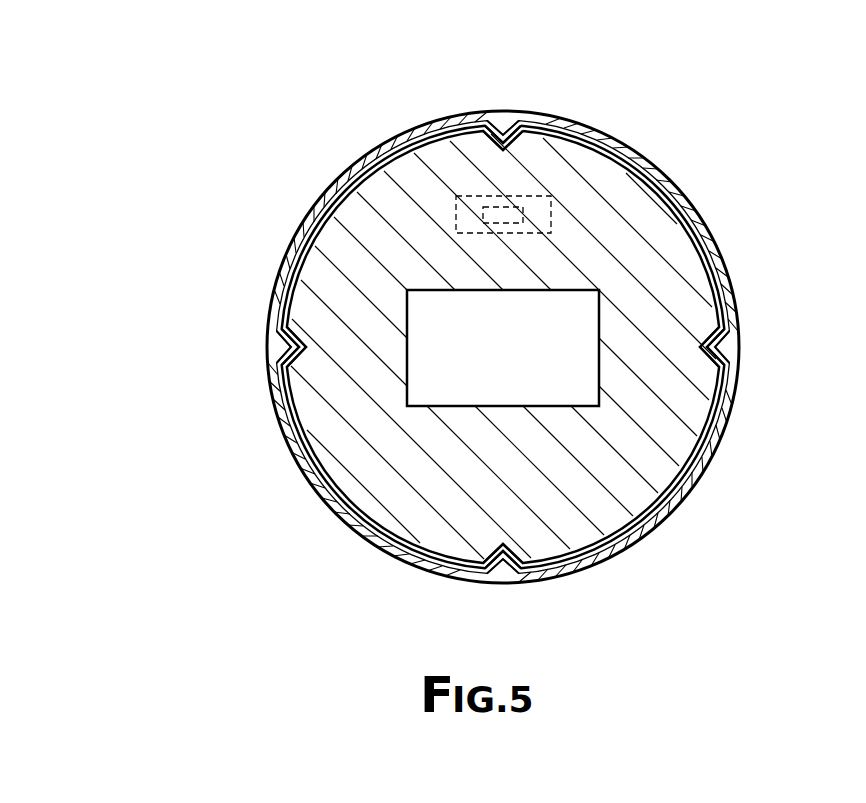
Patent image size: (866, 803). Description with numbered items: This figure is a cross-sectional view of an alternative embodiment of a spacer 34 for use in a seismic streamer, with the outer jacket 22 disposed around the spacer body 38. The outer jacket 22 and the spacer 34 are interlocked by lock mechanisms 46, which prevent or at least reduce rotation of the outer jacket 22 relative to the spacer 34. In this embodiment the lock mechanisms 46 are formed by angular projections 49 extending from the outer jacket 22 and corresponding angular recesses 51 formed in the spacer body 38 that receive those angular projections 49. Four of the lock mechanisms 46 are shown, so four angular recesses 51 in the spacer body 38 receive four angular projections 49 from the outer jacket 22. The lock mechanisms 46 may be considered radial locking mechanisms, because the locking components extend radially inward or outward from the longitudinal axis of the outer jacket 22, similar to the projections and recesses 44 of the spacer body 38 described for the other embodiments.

The outer jacket 22 is at (397, 132).
The spacer 34 is at (323, 277).
The spacer body 38 is at (362, 210).
The recess 44 is at (700, 347).
The lock mechanism 46 is at (527, 143).
The angular projection 49 is at (505, 130).
The angular recess 51 is at (492, 148).